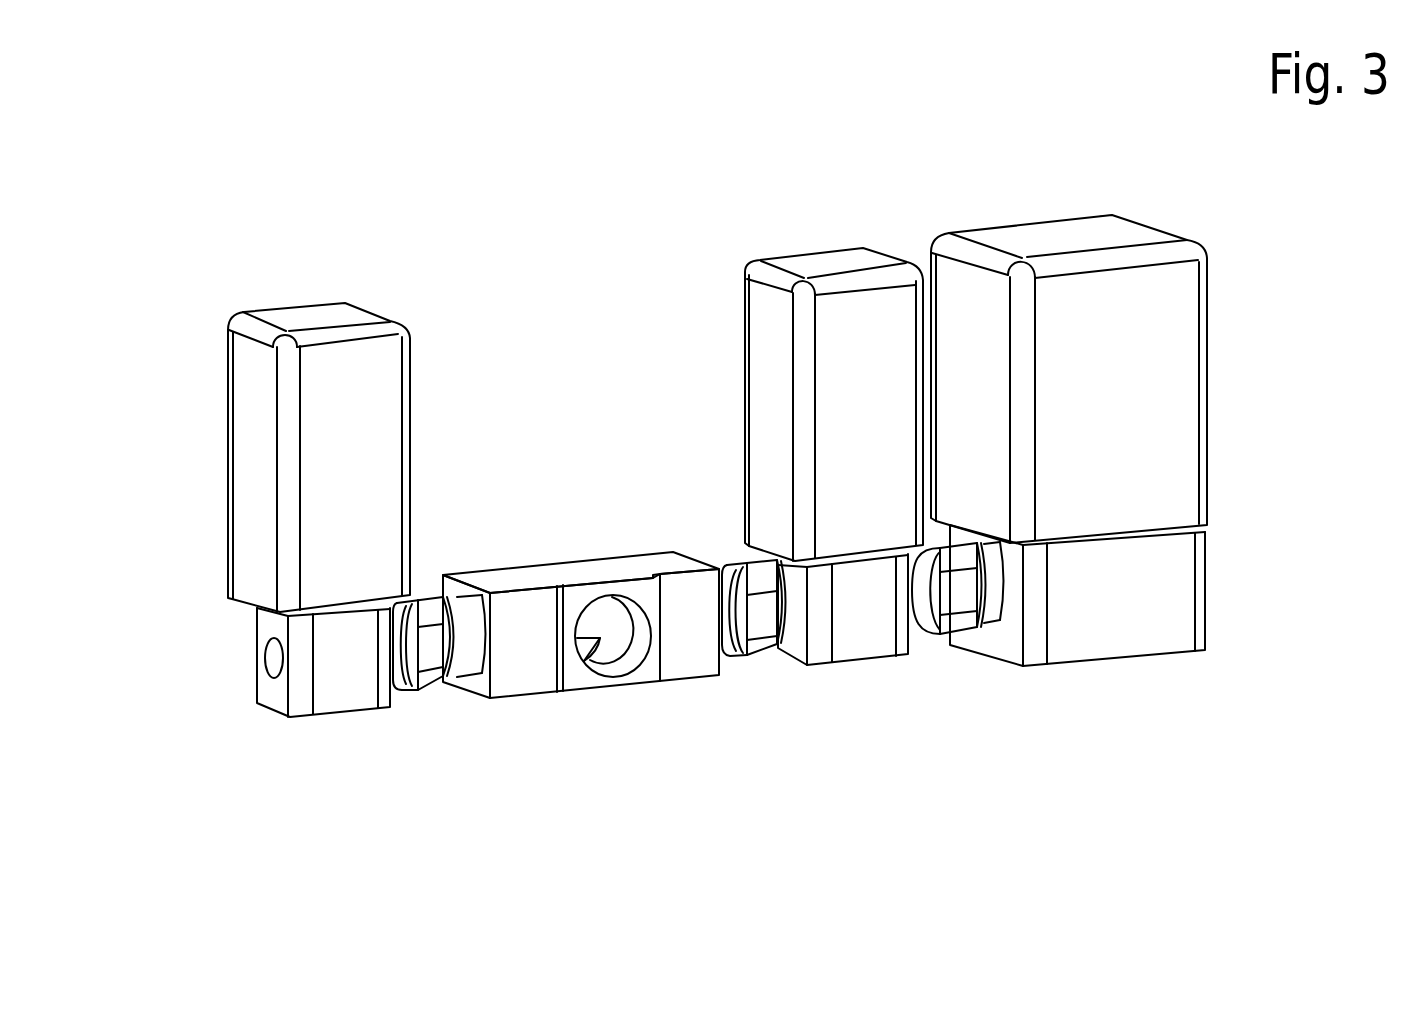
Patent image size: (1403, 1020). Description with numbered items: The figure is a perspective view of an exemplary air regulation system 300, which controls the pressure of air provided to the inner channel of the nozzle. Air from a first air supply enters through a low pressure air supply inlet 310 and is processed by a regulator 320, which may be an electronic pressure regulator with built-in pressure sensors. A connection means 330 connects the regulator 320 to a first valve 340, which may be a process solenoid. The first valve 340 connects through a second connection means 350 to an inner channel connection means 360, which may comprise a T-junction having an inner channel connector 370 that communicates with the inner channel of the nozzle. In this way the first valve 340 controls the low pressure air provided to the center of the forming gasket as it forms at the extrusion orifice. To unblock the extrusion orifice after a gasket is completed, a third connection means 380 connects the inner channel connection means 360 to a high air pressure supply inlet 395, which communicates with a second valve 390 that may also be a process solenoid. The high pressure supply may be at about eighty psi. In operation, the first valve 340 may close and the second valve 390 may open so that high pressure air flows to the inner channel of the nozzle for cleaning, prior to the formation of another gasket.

The air regulation system 300 is at (1190, 212).
The low pressure air supply inlet 310 is at (1205, 557).
The regulator 320 is at (1078, 235).
The connection means 330 is at (948, 630).
The first valve 340 is at (833, 248).
The second connection means 350 is at (757, 650).
The inner channel connection means 360 is at (690, 628).
The inner channel connector 370 is at (610, 627).
The third connection means 380 is at (432, 677).
The second valve 390 is at (317, 313).
The high air pressure supply inlet 395 is at (273, 659).